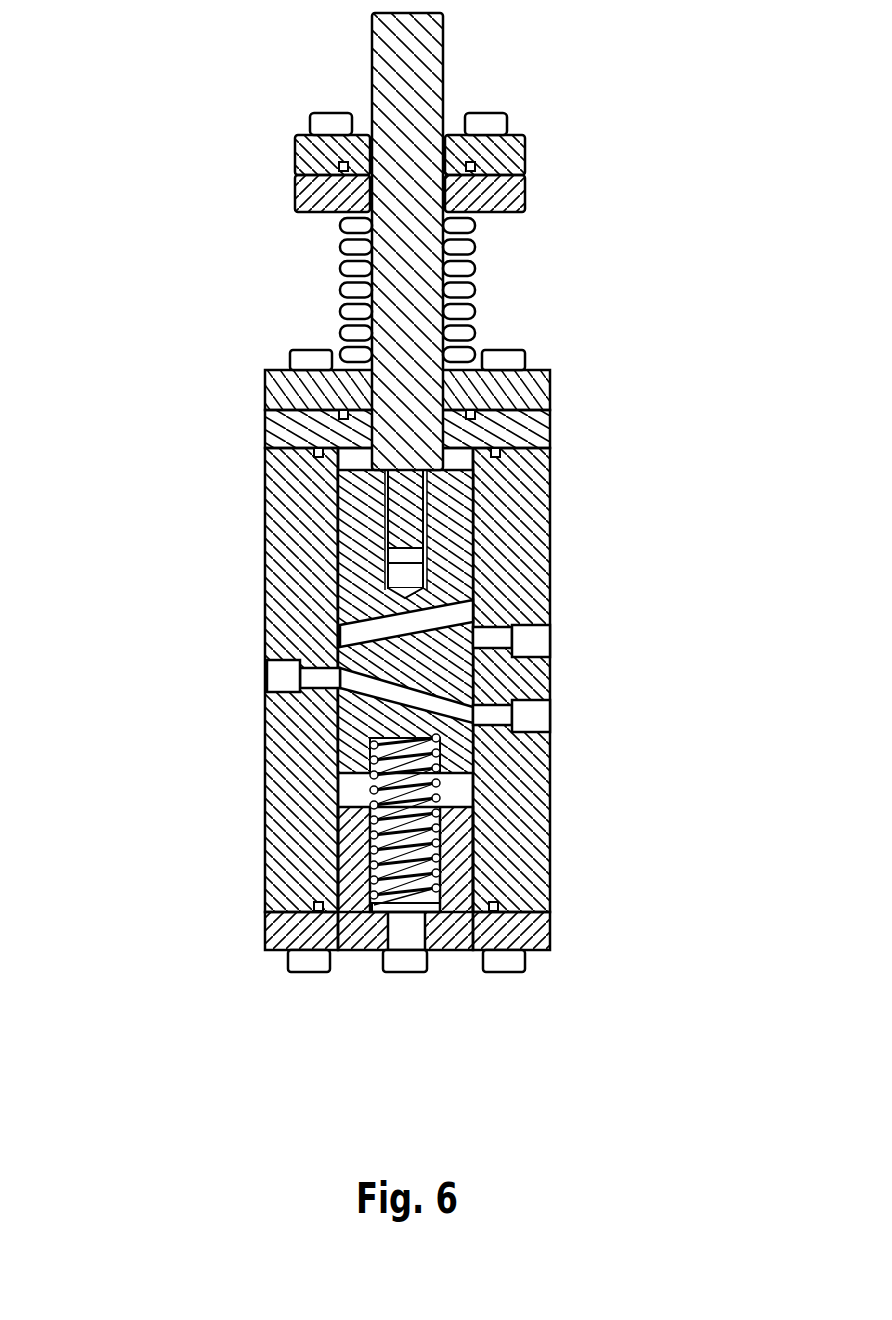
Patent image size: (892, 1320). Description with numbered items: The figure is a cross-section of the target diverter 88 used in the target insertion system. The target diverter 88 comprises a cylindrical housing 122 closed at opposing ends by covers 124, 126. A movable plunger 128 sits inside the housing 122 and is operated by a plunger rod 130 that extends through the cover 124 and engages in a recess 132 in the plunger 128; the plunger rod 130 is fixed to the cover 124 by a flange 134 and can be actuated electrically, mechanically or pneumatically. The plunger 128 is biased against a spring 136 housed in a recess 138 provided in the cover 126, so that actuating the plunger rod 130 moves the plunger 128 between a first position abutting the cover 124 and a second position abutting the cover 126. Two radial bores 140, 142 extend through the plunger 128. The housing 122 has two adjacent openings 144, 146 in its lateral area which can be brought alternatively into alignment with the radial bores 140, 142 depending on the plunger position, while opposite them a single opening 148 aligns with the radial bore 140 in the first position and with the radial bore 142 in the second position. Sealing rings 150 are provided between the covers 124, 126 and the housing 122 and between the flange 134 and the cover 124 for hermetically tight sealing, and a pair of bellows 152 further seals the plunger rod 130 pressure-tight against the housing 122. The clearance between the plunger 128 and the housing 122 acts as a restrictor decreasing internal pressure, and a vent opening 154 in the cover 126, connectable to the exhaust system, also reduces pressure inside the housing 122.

The target diverter 88 is at (183, 271).
The cylindrical housing 122 is at (546, 540).
The cover 124 is at (546, 430).
The cover 126 is at (526, 930).
The plunger 128 is at (363, 575).
The plunger rod 130 is at (426, 73).
The recess 132 is at (412, 575).
The flange 134 is at (546, 390).
The spring 136 is at (440, 860).
The recess 138 is at (346, 850).
The radial bore 140 is at (476, 688).
The radial bore 142 is at (392, 630).
The opening 144 is at (502, 720).
The opening 146 is at (530, 640).
The single opening 148 is at (288, 680).
The sealing rings 150 is at (472, 168).
The bellows 152 is at (462, 268).
The vent opening 154 is at (405, 952).